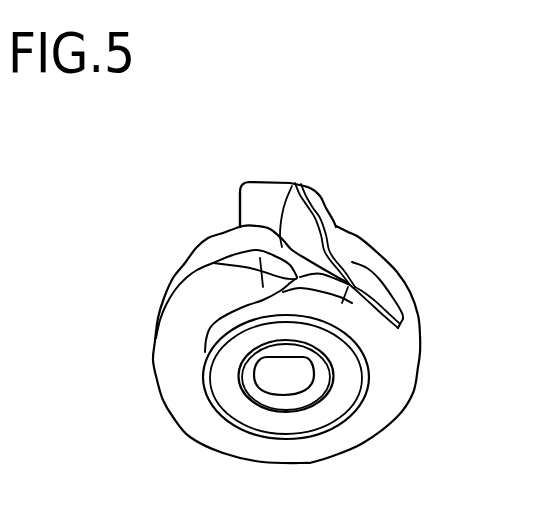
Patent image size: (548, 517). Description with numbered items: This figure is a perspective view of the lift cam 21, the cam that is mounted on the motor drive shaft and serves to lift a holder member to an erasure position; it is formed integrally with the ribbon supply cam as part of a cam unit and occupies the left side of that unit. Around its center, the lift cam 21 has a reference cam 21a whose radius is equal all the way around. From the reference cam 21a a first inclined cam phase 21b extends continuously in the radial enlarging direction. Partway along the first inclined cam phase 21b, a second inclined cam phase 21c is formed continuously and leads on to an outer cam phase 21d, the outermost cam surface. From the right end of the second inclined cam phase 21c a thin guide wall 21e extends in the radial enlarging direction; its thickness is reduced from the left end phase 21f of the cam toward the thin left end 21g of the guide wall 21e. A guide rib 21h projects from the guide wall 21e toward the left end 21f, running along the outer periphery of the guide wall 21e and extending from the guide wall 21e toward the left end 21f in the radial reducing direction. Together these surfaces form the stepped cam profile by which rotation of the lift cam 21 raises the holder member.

The lift cam 21 is at (228, 358).
The reference cam 21a is at (215, 377).
The first inclined cam phase 21b is at (238, 271).
The second inclined cam phase 21c is at (317, 215).
The outer cam phase 21d is at (146, 287).
The guide wall 21e is at (266, 173).
The left end phase 21f is at (399, 344).
The thin left end 21g is at (196, 172).
The guide rib 21h is at (346, 223).